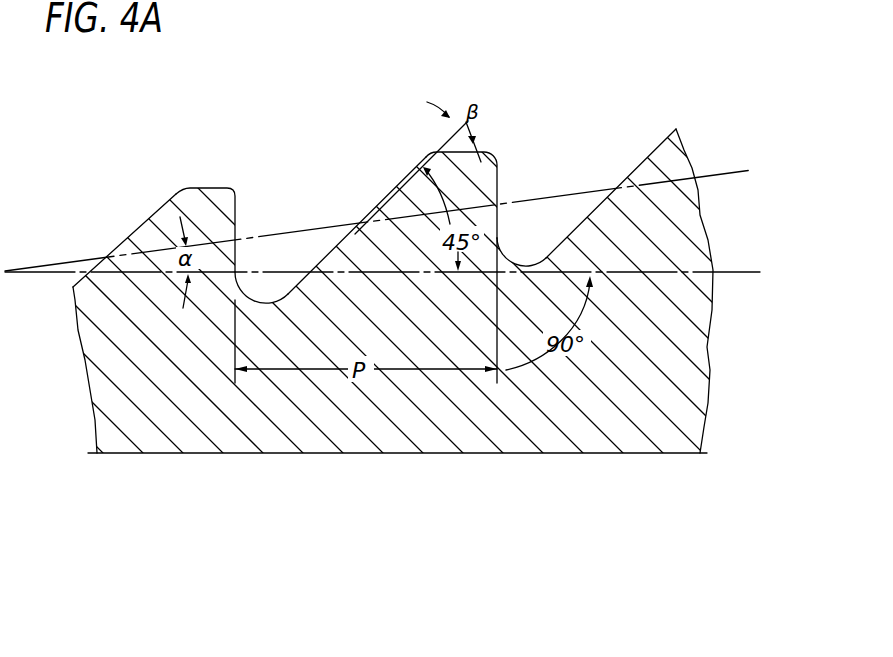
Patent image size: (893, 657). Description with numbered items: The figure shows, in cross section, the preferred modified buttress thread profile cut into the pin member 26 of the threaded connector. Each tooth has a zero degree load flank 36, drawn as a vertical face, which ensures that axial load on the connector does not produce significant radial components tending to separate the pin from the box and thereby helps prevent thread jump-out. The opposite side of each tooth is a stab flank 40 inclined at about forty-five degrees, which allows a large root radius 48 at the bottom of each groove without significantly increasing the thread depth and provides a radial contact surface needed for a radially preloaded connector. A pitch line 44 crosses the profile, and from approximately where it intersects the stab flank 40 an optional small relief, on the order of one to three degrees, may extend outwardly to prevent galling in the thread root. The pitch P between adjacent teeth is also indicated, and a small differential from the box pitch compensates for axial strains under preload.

The pin member 26 is at (502, 430).
The zero degree load flank 36 is at (238, 210).
The 45 degree stab flank 40 is at (80, 282).
The pitch line 44 is at (739, 170).
The root radius 48 is at (268, 300).